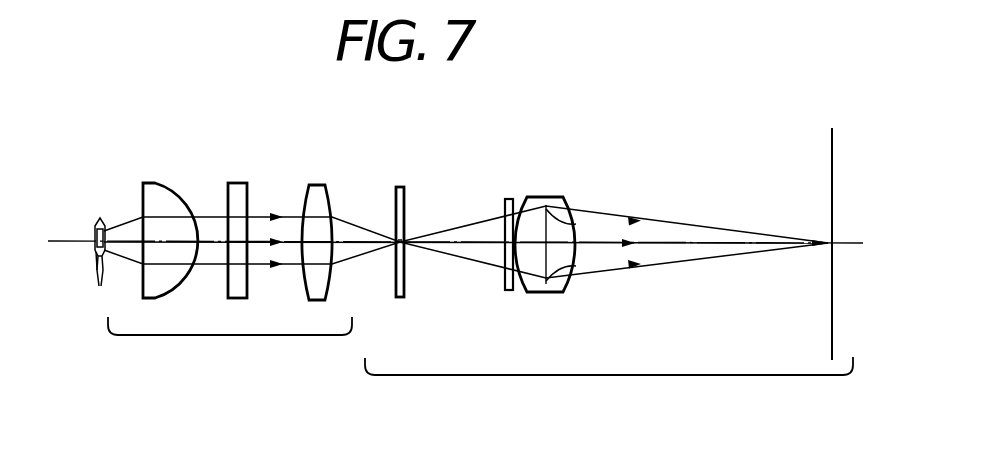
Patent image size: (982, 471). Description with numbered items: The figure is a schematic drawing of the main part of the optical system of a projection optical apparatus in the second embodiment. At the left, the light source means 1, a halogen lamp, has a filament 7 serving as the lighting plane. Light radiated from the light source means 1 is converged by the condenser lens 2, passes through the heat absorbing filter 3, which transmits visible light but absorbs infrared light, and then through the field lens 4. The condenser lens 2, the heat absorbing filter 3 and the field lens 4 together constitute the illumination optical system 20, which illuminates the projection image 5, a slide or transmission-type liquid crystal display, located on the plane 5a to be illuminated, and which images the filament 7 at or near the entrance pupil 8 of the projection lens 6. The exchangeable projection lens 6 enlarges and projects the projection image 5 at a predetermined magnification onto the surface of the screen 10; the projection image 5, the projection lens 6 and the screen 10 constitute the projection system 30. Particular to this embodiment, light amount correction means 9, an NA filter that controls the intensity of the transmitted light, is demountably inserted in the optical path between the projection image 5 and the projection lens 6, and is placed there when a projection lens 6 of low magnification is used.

The light source means 1 is at (99, 217).
The condenser lens 2 is at (155, 183).
The heat absorbing filter 3 is at (238, 183).
The field lens 4 is at (316, 185).
The projection image 5 is at (402, 190).
The plane to be illuminated 5a is at (405, 290).
The projection lens 6 is at (537, 197).
The filament 7 is at (95, 252).
The entrance pupil 8 is at (576, 224).
The light amount correction means 9 is at (507, 199).
The screen 10 is at (832, 178).
The illumination optical system 20 is at (230, 346).
The projection system 30 is at (609, 385).